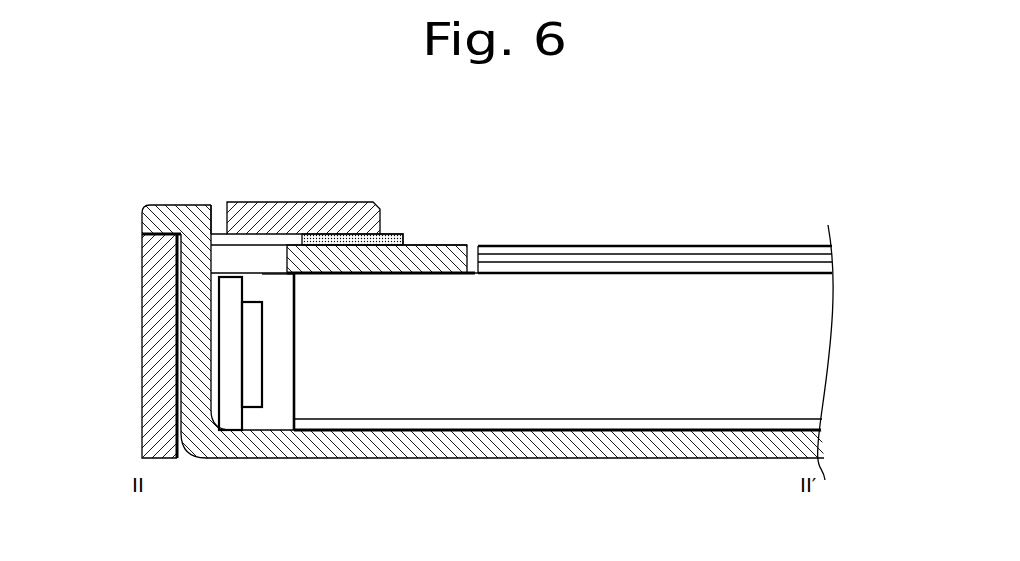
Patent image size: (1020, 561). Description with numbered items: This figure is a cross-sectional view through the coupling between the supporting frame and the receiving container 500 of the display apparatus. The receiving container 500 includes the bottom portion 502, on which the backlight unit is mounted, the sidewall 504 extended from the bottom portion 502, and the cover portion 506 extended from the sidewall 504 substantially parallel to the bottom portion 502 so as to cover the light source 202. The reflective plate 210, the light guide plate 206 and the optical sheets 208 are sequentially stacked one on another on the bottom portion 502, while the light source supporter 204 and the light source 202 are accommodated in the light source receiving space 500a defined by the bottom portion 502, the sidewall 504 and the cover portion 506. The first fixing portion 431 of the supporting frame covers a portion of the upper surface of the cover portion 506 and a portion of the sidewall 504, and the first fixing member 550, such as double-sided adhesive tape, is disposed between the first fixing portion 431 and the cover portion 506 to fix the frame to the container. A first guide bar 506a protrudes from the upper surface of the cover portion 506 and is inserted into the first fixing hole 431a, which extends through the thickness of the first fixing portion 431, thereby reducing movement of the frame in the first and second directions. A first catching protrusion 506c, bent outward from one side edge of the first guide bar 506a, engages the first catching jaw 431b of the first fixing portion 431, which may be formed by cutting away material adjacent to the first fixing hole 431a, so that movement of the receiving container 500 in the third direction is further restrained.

The receiving container 500 is at (473, 334).
The light source receiving space 500a is at (281, 386).
The bottom portion 502 is at (521, 449).
The sidewall 504 is at (183, 412).
The cover portion 506 is at (340, 262).
The first guide bar 506a is at (214, 206).
The first catching protrusion 506c is at (170, 204).
The first fixing portion 431 is at (215, 297).
The first fixing hole 431a is at (224, 203).
The first catching jaw 431b is at (161, 253).
The first fixing member 550 is at (398, 231).
The light source 202 is at (247, 338).
The light source supporter 204 is at (228, 305).
The light guide plate 206 is at (818, 347).
The optical sheets 208 is at (843, 248).
The reflective plate 210 is at (815, 425).